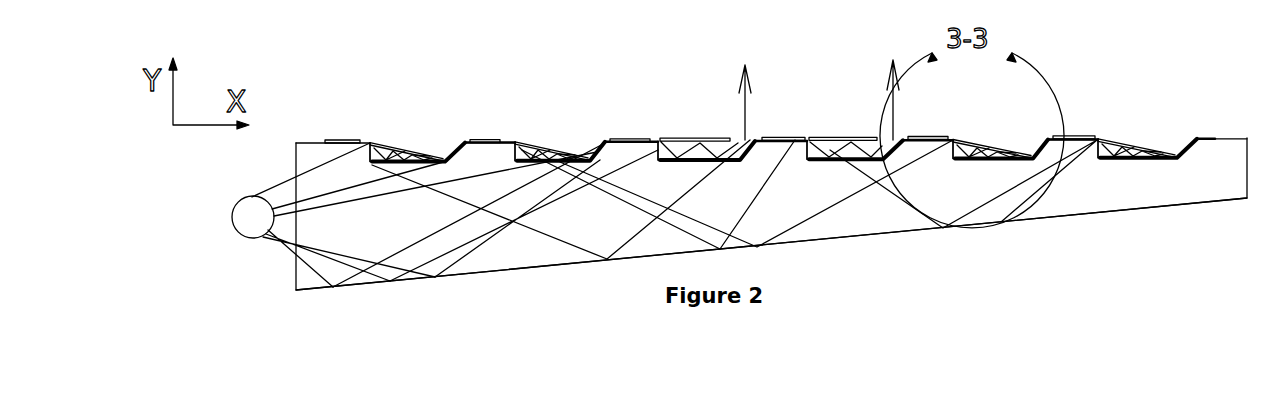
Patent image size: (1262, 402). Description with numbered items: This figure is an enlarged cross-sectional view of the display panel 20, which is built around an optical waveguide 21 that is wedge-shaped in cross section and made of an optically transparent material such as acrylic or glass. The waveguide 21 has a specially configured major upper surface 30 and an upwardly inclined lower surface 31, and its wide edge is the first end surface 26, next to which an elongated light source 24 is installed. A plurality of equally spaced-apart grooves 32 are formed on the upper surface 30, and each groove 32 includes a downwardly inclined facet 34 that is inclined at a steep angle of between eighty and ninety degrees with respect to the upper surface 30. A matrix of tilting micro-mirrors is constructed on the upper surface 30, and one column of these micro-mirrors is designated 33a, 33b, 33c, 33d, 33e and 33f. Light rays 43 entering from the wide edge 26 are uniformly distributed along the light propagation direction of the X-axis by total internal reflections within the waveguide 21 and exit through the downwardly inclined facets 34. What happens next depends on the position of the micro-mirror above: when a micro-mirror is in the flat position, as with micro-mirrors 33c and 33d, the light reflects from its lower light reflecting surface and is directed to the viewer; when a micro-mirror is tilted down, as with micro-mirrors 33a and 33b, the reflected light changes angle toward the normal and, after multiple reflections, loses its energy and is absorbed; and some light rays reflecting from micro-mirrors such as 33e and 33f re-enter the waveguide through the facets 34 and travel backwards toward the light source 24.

The display panel 20 is at (343, 98).
The optical waveguide 21 is at (895, 215).
The light source 24 is at (247, 216).
The first end surface 26 is at (293, 256).
The upper surface 30 is at (310, 141).
The lower surface 31 is at (1153, 210).
The groove 32 is at (433, 147).
The tilting micro-mirror 33a is at (408, 147).
The tilting micro-mirror 33b is at (553, 146).
The tilting micro-mirror 33c is at (695, 140).
The tilting micro-mirror 33d is at (837, 136).
The tilting micro-mirror 33e is at (993, 137).
The tilting micro-mirror 33f is at (1140, 140).
The facet 34 is at (371, 141).
The light rays 43 is at (488, 240).